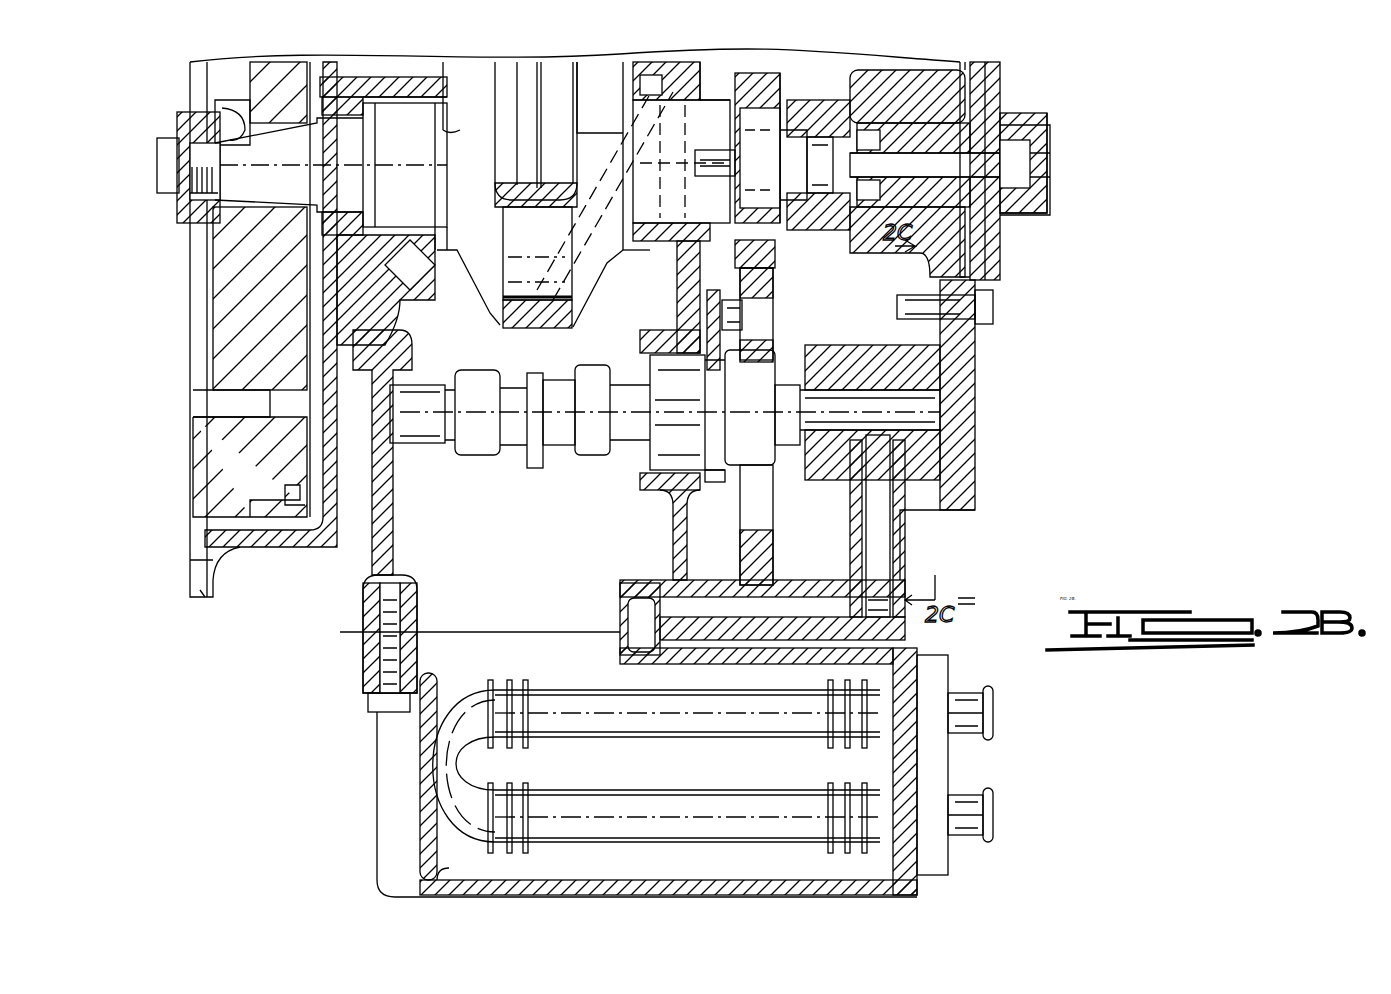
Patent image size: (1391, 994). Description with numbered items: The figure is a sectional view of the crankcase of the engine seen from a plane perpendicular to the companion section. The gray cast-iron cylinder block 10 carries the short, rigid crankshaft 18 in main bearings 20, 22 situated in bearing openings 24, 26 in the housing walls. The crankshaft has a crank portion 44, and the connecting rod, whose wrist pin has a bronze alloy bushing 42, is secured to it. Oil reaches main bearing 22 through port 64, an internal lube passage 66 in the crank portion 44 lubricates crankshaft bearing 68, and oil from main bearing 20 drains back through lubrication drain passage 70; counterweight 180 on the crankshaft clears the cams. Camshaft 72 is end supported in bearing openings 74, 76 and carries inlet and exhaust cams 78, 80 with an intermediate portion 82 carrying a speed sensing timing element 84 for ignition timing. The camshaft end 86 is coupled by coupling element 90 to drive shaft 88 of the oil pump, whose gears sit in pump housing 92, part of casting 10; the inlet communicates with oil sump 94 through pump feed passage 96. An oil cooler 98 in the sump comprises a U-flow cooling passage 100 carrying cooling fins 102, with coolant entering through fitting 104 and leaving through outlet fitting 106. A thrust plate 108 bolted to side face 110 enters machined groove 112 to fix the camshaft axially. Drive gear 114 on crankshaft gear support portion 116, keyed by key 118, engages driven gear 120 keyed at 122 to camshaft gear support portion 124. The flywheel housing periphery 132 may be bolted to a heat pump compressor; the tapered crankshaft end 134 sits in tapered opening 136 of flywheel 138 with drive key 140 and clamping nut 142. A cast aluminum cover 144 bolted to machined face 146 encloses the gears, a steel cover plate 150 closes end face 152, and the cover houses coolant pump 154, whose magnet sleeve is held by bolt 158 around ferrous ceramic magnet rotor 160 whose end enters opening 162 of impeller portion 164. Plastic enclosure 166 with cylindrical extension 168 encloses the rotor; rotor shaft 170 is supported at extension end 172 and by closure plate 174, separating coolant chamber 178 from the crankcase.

The cylinder block 10 is at (703, 70).
The crankshaft 18 is at (585, 313).
The crankshaft main bearing 20 is at (352, 240).
The crankshaft main bearing 22 is at (725, 192).
The bearing opening 24 is at (378, 88).
The bearing opening 26 is at (700, 95).
The bronze alloy bushing 42 is at (535, 122).
The crank portion 44 is at (575, 262).
The lubrication oil port 64 is at (665, 108).
The internal lube passage 66 is at (585, 290).
The crankshaft bearing 68 is at (520, 325).
The lubrication drain passage 70 is at (380, 285).
The camshaft 72 is at (560, 447).
The bearing opening 74 is at (412, 447).
The bearing opening 76 is at (688, 345).
The inlet cam 78 is at (482, 457).
The exhaust cam 80 is at (596, 457).
The intermediate portion 82 is at (520, 448).
The speed sensing timing element 84 is at (538, 470).
The camshaft end 86 is at (788, 388).
The drive shaft 88 is at (835, 400).
The coupling element 90 is at (785, 455).
The pump housing 92 is at (945, 355).
The oil sump 94 is at (556, 655).
The pump feed passage 96 is at (755, 612).
The oil cooler 98 is at (757, 722).
The U-flow cooling passage 100 is at (665, 725).
The cooling fins 102 is at (826, 748).
The fitting 104 is at (990, 713).
The oil outlet fitting 106 is at (990, 815).
The thrust plate 108 is at (745, 310).
The side face 110 is at (705, 243).
The machined groove 112 is at (705, 462).
The drive gear 114 is at (780, 95).
The gear support portion 116 is at (722, 195).
The key 118 is at (760, 158).
The driven gear 120 is at (775, 272).
The key 122 is at (748, 365).
The gear support portion 124 is at (768, 460).
The outer periphery of flywheel housing 132 is at (205, 597).
The crankshaft end 134 is at (168, 150).
The tapered opening 136 is at (300, 213).
The flywheel 138 is at (275, 62).
The drive key 140 is at (222, 108).
The clamping nut 142 is at (180, 115).
The cast aluminum cover 144 is at (860, 550).
The machined face 146 is at (700, 72).
The steel cover plate 150 is at (972, 452).
The end face 152 is at (945, 336).
The coolant pump 154 is at (995, 85).
The bolt 158 is at (907, 96).
The ferrous ceramic magnet rotor 160 is at (895, 250).
The opening 162 is at (1048, 158).
The impeller portion 164 is at (995, 100).
The plastic enclosure 166 is at (970, 75).
The cylindrical extension 168 is at (905, 118).
The rotor shaft 170 is at (882, 155).
The end of extension 172 is at (820, 225).
The coolant pump closure plate 174 is at (1048, 205).
The coolant chamber 178 is at (1072, 125).
The counterweight 180 is at (467, 97).